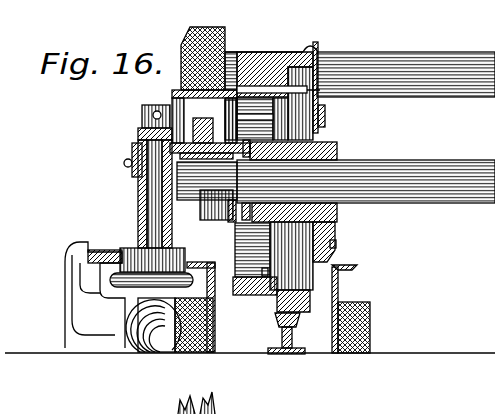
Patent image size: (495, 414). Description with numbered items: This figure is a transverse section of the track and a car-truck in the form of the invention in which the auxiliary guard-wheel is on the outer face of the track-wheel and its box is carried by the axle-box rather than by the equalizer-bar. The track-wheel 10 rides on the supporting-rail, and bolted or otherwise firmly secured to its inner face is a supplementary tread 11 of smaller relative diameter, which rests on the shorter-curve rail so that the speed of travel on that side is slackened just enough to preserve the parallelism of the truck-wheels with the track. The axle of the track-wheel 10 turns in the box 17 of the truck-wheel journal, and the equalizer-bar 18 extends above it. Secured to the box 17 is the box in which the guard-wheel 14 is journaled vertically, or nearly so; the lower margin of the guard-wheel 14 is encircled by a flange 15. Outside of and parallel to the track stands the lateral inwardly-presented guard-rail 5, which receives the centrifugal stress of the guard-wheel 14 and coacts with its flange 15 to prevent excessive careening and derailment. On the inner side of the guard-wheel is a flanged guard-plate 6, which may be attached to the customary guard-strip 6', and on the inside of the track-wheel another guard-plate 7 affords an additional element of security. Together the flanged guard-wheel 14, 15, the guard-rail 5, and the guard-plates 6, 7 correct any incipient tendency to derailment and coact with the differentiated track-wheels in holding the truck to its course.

The track-wheel 10 is at (332, 124).
The equalizer-bar 18 is at (204, 120).
The box of the truck-wheel journal 17 is at (140, 130).
The guard-wheel 14 is at (131, 248).
The guard-rail 5 is at (95, 290).
The flange 15 is at (151, 288).
The flanged guard-plate 6 is at (170, 298).
The guard-strip 6' is at (271, 364).
The supplementary tread 11 is at (283, 288).
The guard-plate 7 is at (351, 300).